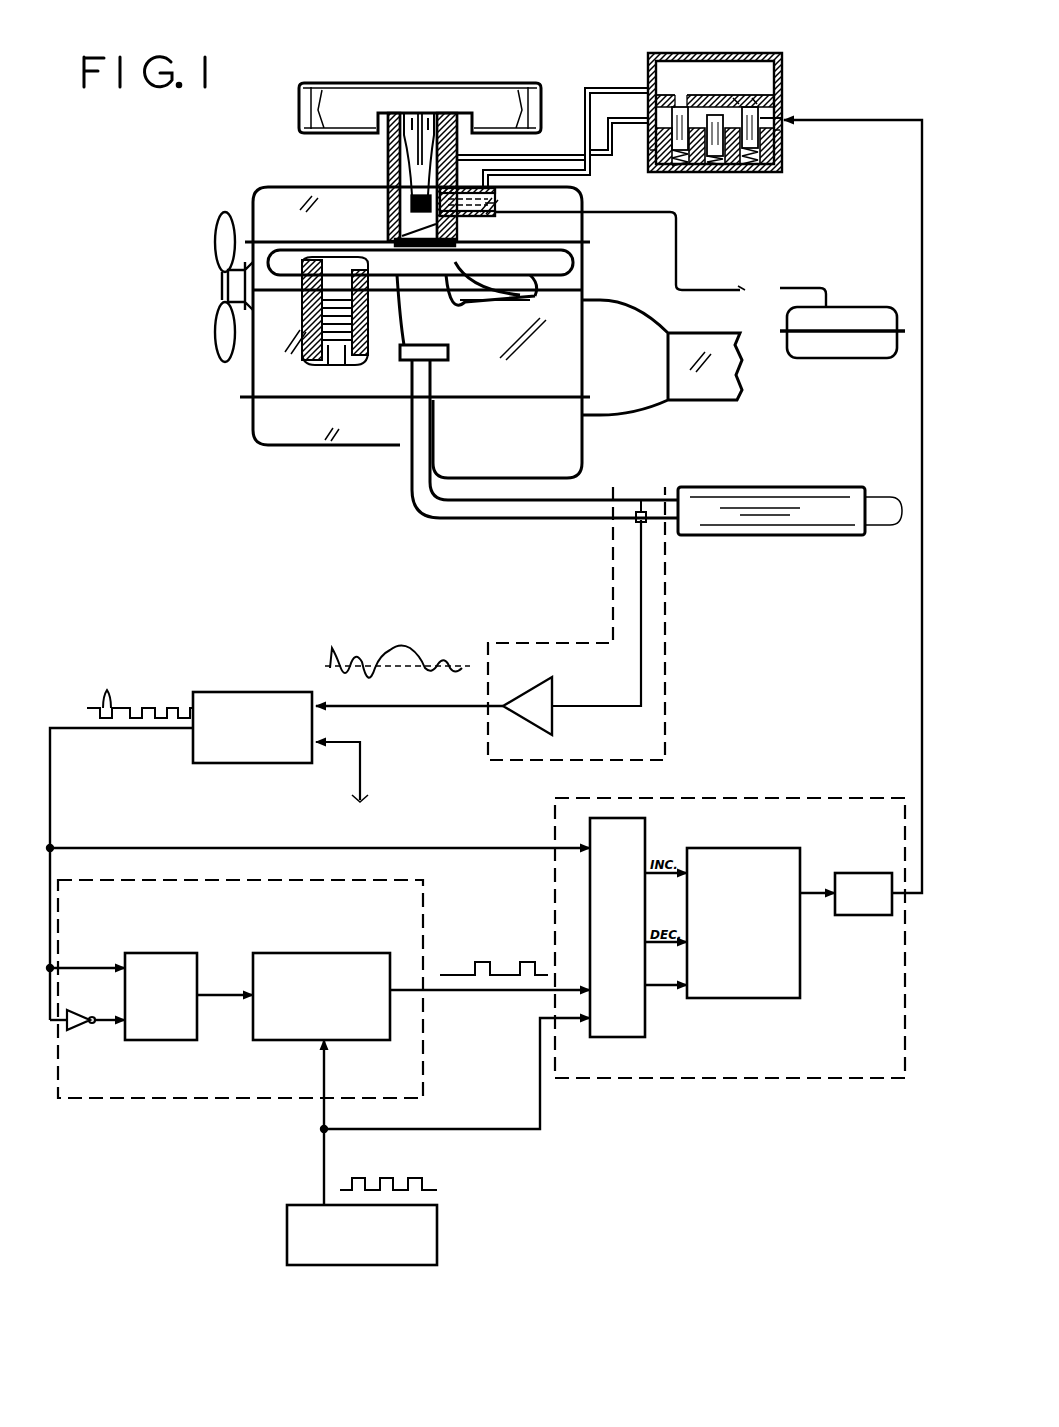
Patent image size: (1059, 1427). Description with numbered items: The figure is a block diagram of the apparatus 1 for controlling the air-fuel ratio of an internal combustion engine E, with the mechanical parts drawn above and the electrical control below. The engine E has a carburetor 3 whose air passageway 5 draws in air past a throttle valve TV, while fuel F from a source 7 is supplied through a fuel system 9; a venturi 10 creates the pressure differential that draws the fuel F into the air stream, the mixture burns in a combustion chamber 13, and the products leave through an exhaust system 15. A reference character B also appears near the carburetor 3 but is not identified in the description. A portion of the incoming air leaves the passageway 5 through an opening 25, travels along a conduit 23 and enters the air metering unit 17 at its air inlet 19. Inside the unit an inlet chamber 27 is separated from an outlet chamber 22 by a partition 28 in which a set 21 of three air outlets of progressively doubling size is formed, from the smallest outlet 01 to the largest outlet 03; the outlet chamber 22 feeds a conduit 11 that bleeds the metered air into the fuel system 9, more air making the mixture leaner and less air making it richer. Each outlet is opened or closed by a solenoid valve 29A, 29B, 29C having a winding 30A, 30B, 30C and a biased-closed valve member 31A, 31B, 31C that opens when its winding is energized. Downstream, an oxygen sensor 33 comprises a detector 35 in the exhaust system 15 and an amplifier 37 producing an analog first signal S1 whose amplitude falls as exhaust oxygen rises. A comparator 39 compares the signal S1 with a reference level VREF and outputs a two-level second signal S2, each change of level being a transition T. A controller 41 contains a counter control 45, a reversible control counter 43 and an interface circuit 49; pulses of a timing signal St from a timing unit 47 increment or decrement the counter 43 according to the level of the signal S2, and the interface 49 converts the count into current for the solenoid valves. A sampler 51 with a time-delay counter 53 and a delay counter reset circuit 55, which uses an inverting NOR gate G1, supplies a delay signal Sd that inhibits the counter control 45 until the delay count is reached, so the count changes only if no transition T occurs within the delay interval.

The air-fuel ratio control apparatus 1 is at (318, 620).
The carburetor 3 is at (386, 142).
The air passageway 5 is at (395, 168).
The fuel source 7 is at (882, 314).
The fuel system 9 is at (447, 186).
The venturi 10 is at (411, 209).
The conduit 11 is at (532, 170).
The combustion chamber 13 is at (306, 303).
The exhaust system 15 is at (410, 489).
The air metering unit 17 is at (847, 72).
The air inlet 19 is at (645, 121).
The set of air outlets 21 is at (762, 85).
The outlet chamber 22 is at (722, 92).
The conduit 23 is at (452, 160).
The opening 25 is at (430, 137).
The inlet chamber 27 is at (764, 118).
The partition 28 is at (700, 100).
The solenoid valve 29A is at (677, 178).
The solenoid valve 29B is at (740, 184).
The solenoid valve 29C is at (776, 148).
The winding 30A is at (668, 170).
The winding 30B is at (728, 175).
The winding 30C is at (764, 172).
The valve member 31A is at (653, 150).
The valve member 31B is at (733, 112).
The valve member 31C is at (776, 131).
The air outlet 01 is at (655, 92).
The air outlet 03 is at (752, 95).
The oxygen sensor 33 is at (580, 642).
The detector 35 is at (636, 523).
The amplifier 37 is at (532, 682).
The comparator 39 is at (250, 692).
The controller 41 is at (805, 777).
The control counter 43 is at (750, 848).
The counter control 45 is at (645, 839).
The timing unit 47 is at (287, 1227).
The interface circuit 49 is at (875, 860).
The sampler 51 is at (235, 1100).
The time-delay counter 53 is at (340, 934).
The delay counter reset circuit 55 is at (190, 937).
The internal combustion engine E is at (250, 367).
The fuel F is at (500, 206).
The air bleed B is at (545, 228).
The throttle valve TV is at (401, 233).
The transition T is at (104, 702).
The first electrical signal S1 is at (392, 656).
The second electrical signal S2 is at (112, 708).
The delay signal Sd is at (452, 962).
The timing signal St is at (395, 1178).
The NOR gate G1 is at (76, 1030).
The reference level VREF is at (356, 787).